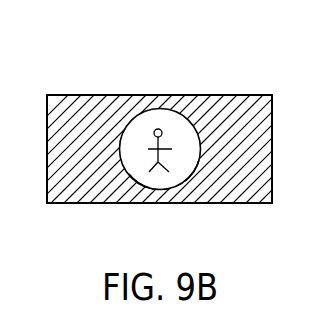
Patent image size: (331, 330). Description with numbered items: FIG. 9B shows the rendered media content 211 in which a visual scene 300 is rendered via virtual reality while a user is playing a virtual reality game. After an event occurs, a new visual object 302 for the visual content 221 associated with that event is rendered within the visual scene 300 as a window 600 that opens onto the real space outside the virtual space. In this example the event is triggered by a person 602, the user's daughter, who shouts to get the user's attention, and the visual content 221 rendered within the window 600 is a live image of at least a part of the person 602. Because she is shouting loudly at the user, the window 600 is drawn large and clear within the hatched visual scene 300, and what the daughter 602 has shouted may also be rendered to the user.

The visual scene 300 is at (72, 108).
The rendered media content 211 is at (250, 110).
The visual content 221 is at (137, 133).
The visual object 302 is at (169, 110).
The window 600 is at (137, 180).
The person 602 is at (194, 165).